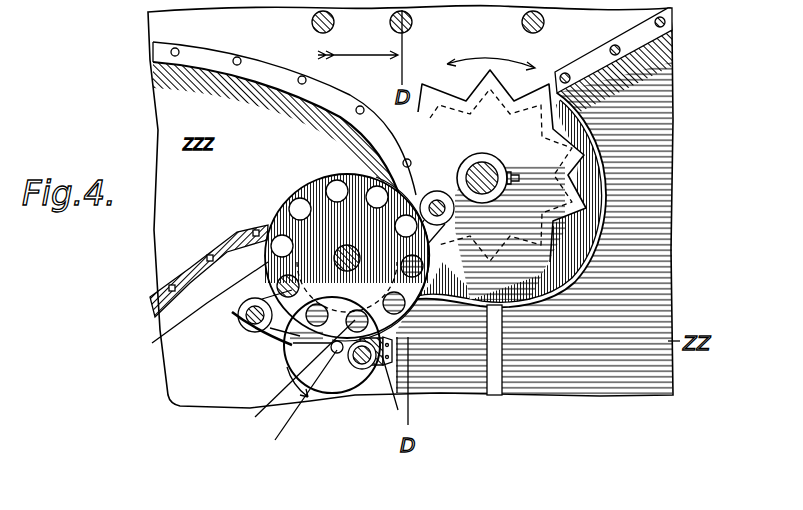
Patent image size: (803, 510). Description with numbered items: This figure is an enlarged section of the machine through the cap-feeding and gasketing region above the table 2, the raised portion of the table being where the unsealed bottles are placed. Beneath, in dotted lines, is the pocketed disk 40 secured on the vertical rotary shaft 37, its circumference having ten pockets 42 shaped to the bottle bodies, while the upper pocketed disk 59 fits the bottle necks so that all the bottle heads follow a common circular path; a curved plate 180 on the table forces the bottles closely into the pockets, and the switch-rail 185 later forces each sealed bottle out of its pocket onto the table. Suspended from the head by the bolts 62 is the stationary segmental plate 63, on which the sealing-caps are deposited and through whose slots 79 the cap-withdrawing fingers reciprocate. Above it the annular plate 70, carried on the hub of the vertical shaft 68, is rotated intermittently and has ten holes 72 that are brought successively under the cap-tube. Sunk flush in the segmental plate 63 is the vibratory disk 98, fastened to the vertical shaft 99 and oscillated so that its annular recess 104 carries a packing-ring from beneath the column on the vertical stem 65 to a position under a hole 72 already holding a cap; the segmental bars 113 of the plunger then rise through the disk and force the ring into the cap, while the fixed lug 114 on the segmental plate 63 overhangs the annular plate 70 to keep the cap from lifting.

The table 2 is at (674, 296).
The vertical rotary shaft 37 is at (481, 165).
The pocketed disk 40 is at (493, 300).
The pockets 42 is at (660, 194).
The pocketed disk 59 is at (668, 102).
The bolts 62 is at (250, 322).
The segmental plate 63 is at (278, 342).
The vertical stem 65 is at (364, 370).
The vertical shaft 68 is at (398, 410).
The annular plate 70 is at (283, 195).
The holes 72 is at (268, 222).
The slots 79 is at (175, 322).
The vibratory disk 98 is at (322, 378).
The vertical shaft 99 is at (352, 388).
The annular recess 104 is at (286, 380).
The segmental bars 113 is at (291, 406).
The fixed lug 114 is at (418, 398).
The curved plate 180 is at (433, 300).
The switch-rail 185 is at (172, 268).